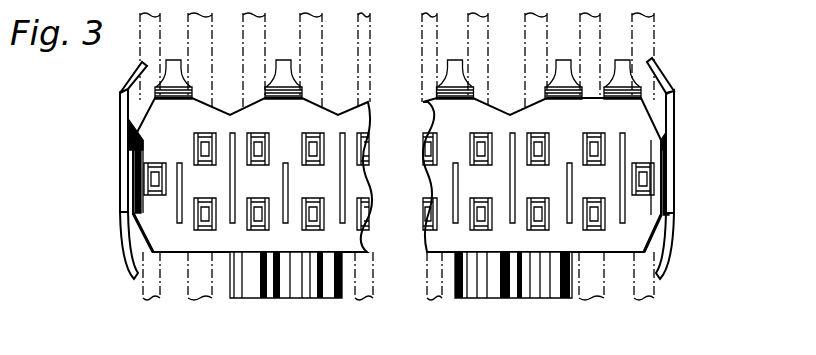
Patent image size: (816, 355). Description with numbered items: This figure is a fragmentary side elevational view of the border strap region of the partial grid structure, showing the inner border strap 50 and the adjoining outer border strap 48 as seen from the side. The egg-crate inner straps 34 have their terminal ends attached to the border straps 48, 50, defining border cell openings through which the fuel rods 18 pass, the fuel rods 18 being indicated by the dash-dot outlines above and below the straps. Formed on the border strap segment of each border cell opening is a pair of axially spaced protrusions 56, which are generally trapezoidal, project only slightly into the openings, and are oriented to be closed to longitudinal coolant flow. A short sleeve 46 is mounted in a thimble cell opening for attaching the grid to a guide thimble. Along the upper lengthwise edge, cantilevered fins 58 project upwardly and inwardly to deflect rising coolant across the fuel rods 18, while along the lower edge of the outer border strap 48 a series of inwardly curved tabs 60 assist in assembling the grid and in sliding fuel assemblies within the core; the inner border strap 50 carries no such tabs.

The fuel rods 18 is at (659, 27).
The inner straps 34 is at (285, 223).
The sleeve 46 is at (232, 280).
The outer border strap 48 is at (118, 117).
The inner border strap 50 is at (316, 118).
The protrusions 56 is at (322, 198).
The cantilevered fins 58 is at (132, 76).
The inwardly curved tabs 60 is at (125, 272).